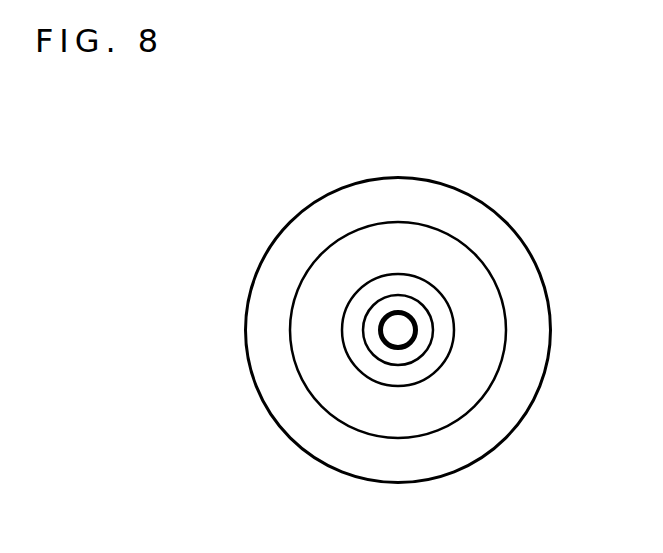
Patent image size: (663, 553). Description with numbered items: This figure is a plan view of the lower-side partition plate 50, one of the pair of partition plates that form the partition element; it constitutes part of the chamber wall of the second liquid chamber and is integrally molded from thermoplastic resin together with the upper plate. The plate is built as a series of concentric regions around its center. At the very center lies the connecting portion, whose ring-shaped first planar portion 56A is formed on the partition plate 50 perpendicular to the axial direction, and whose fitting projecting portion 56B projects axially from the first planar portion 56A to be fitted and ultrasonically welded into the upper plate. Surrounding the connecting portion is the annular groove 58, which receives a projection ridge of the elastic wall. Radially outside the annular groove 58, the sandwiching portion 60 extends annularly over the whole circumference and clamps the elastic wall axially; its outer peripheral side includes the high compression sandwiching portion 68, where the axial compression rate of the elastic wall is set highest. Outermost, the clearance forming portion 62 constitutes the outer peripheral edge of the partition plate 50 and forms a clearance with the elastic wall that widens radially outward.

The partition plate 50 is at (418, 140).
The first planar portion 56A is at (402, 357).
The fitting projecting portion 56B is at (402, 323).
The annular groove 58 is at (442, 333).
The sandwiching portion 60 is at (458, 383).
The clearance forming portion 62 is at (515, 270).
The high compression sandwiching portion 68 is at (462, 422).